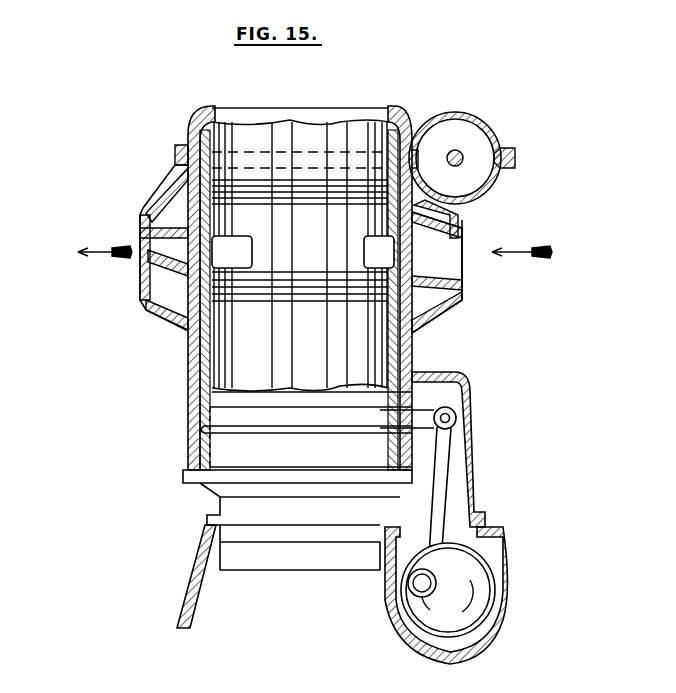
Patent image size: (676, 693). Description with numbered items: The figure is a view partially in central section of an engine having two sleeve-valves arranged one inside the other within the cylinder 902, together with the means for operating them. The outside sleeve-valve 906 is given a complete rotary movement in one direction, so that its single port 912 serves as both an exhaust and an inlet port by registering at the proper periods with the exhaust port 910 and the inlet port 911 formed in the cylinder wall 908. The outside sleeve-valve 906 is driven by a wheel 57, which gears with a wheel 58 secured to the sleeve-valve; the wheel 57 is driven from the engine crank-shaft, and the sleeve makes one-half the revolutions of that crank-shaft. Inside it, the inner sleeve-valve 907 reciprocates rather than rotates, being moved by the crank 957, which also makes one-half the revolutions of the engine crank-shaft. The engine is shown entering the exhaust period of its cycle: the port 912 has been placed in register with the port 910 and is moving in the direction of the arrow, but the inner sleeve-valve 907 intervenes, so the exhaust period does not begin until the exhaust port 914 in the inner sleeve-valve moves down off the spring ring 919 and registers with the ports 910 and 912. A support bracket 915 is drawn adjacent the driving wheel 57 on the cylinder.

The wheel 57 is at (470, 134).
The wheel 58 is at (332, 152).
The cylinder 902 is at (303, 249).
The outside sleeve-valve 906 is at (192, 347).
The inner sleeve-valve 907 is at (216, 396).
The cylinder 908 is at (418, 336).
The exhaust port 910 is at (242, 256).
The inlet port 911 is at (380, 258).
The port 912 is at (142, 238).
The exhaust port 914 is at (175, 200).
The support bar 915 is at (400, 215).
The spring ring 919 is at (283, 212).
The crank 957 is at (437, 582).